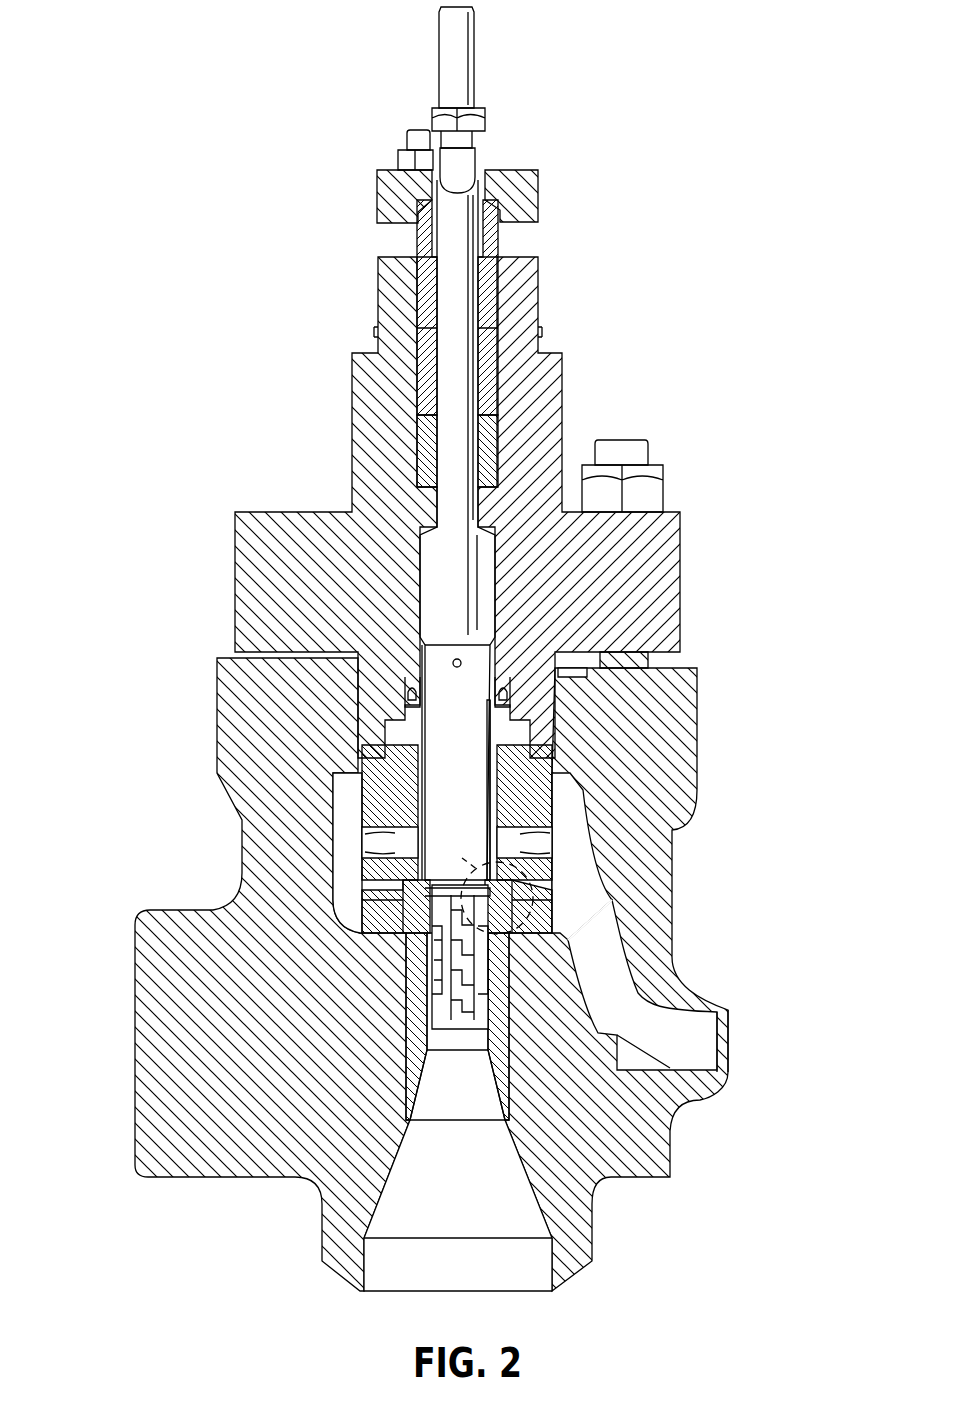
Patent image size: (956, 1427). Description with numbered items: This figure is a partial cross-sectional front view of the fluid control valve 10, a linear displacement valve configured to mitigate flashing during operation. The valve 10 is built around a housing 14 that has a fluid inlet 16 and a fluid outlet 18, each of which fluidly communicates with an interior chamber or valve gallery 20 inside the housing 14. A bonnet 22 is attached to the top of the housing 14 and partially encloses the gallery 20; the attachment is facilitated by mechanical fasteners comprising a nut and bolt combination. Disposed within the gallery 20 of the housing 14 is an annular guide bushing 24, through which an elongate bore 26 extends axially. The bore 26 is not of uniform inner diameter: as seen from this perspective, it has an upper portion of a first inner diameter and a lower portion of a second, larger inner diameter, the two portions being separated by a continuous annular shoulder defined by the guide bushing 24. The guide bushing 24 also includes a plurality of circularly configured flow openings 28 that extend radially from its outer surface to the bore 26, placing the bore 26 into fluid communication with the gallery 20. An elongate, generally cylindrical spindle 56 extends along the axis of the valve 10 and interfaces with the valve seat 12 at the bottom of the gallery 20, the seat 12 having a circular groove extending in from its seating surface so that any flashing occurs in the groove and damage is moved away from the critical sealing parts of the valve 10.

The fluid control valve 10 is at (198, 172).
The valve seat 12 is at (375, 910).
The housing 14 is at (158, 1087).
The fluid inlet 16 is at (700, 1046).
The fluid outlet 18 is at (447, 1263).
The valve gallery 20 is at (345, 820).
The bonnet 22 is at (266, 538).
The guide bushing 24 is at (450, 807).
The bore 26 is at (490, 822).
The flow openings 28 is at (378, 850).
The spindle 56 is at (545, 830).